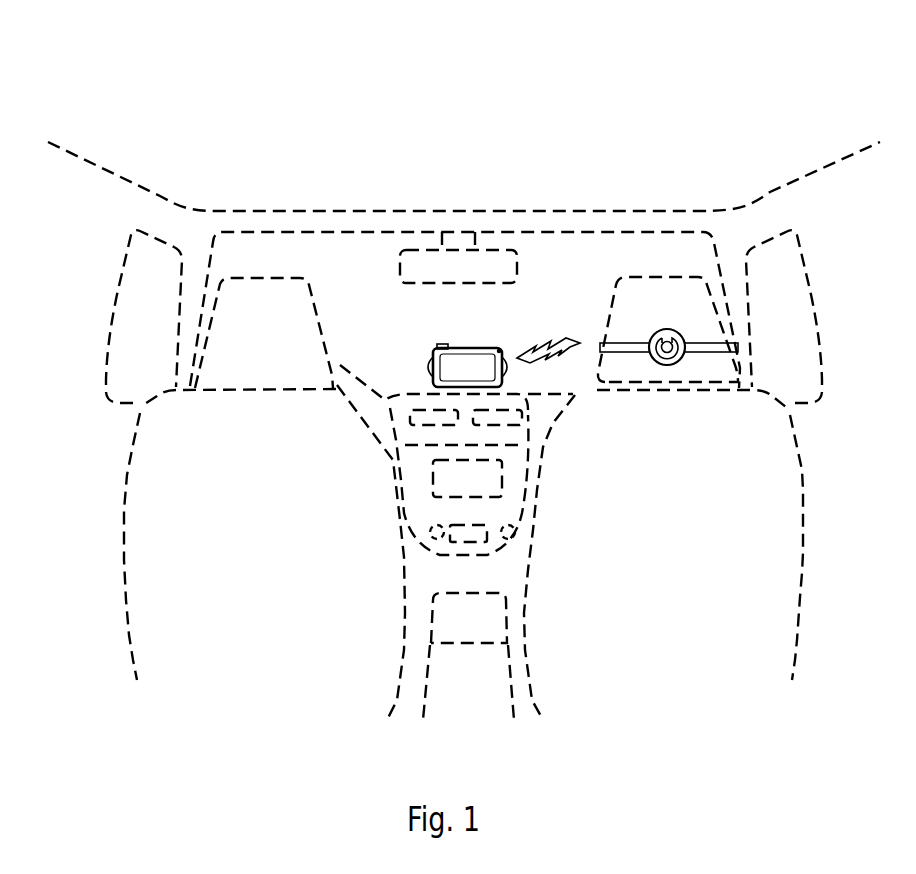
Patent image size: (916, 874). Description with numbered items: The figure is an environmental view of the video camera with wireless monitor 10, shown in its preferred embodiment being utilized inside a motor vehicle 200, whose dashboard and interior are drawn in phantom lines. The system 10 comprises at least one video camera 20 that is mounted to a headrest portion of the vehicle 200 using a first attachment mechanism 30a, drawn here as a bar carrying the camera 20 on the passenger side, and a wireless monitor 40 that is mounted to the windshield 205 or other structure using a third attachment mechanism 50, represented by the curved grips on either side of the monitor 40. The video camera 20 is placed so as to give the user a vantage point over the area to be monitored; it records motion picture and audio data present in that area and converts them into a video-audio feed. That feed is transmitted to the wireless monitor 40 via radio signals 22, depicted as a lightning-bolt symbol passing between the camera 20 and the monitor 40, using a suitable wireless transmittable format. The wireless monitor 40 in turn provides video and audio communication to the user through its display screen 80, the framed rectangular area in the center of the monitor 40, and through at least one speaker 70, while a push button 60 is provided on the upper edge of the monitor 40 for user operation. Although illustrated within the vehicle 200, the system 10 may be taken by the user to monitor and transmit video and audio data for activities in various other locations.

The video camera with wireless monitor 10 is at (185, 136).
The vehicle 200 is at (310, 210).
The windshield 205 is at (598, 253).
The video camera 20 is at (683, 333).
The first attachment mechanism 30a is at (713, 349).
The radio signal 22 is at (563, 356).
The wireless monitor 40 is at (488, 368).
The display screen 80 is at (463, 360).
The push button 60 is at (438, 346).
The speaker 70 is at (500, 351).
The third attachment mechanism 50 is at (427, 366).